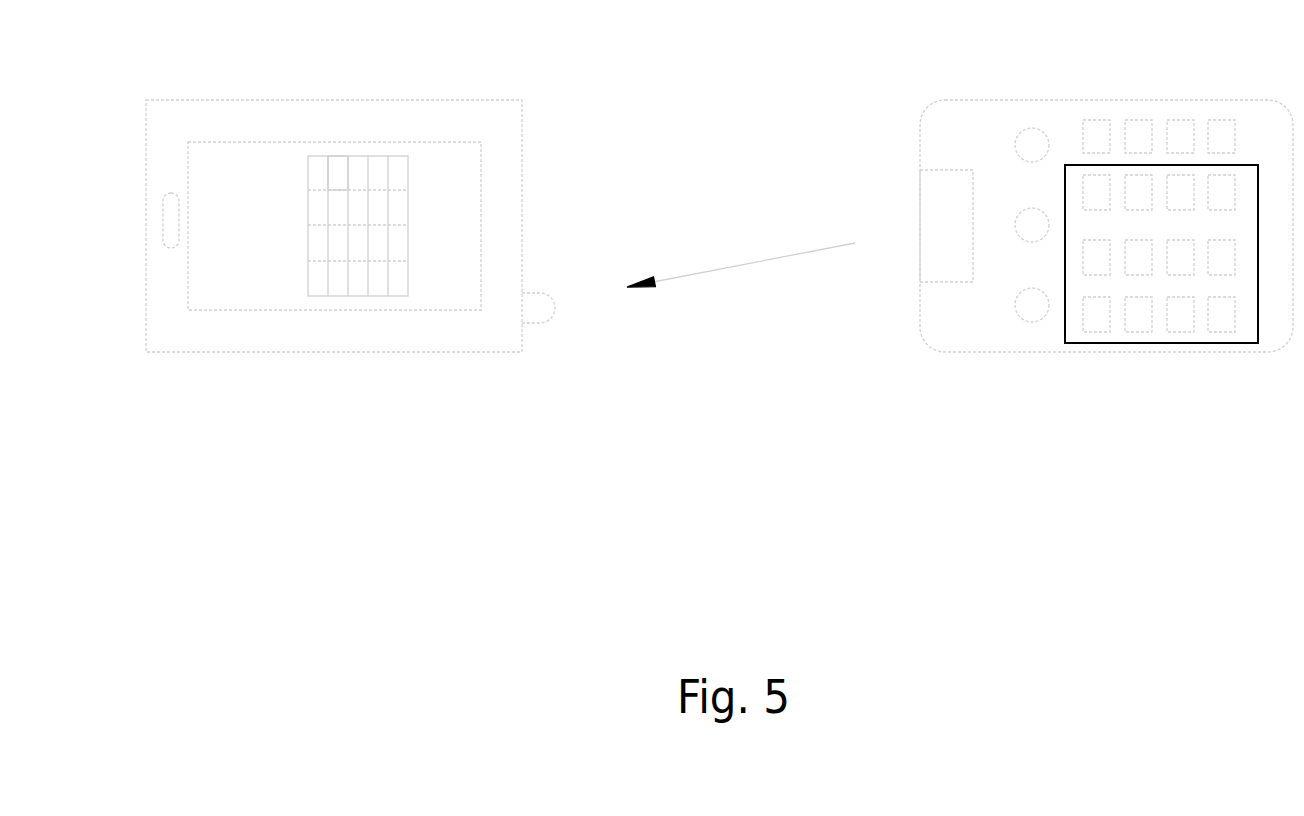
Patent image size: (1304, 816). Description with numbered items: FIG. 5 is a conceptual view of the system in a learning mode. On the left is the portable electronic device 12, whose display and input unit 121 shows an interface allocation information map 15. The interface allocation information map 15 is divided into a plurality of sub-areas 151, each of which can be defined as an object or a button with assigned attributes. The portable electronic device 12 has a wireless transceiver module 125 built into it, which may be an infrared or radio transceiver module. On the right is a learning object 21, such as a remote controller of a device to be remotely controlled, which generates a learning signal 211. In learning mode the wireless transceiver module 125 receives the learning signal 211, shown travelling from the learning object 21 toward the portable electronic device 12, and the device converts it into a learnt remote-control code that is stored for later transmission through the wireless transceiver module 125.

The portable electronic device 12 is at (382, 352).
The display and input unit 121 is at (233, 285).
The wireless transceiver module 125 is at (538, 312).
The interface allocation information map 15 is at (392, 155).
The sub-area 151 is at (338, 157).
The learning object 21 is at (1092, 352).
The learning signal 211 is at (795, 257).